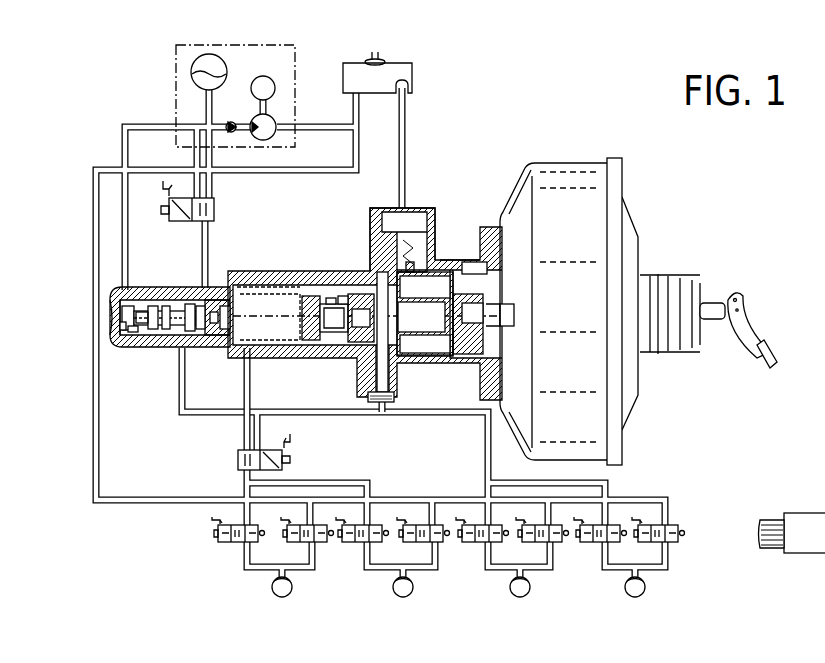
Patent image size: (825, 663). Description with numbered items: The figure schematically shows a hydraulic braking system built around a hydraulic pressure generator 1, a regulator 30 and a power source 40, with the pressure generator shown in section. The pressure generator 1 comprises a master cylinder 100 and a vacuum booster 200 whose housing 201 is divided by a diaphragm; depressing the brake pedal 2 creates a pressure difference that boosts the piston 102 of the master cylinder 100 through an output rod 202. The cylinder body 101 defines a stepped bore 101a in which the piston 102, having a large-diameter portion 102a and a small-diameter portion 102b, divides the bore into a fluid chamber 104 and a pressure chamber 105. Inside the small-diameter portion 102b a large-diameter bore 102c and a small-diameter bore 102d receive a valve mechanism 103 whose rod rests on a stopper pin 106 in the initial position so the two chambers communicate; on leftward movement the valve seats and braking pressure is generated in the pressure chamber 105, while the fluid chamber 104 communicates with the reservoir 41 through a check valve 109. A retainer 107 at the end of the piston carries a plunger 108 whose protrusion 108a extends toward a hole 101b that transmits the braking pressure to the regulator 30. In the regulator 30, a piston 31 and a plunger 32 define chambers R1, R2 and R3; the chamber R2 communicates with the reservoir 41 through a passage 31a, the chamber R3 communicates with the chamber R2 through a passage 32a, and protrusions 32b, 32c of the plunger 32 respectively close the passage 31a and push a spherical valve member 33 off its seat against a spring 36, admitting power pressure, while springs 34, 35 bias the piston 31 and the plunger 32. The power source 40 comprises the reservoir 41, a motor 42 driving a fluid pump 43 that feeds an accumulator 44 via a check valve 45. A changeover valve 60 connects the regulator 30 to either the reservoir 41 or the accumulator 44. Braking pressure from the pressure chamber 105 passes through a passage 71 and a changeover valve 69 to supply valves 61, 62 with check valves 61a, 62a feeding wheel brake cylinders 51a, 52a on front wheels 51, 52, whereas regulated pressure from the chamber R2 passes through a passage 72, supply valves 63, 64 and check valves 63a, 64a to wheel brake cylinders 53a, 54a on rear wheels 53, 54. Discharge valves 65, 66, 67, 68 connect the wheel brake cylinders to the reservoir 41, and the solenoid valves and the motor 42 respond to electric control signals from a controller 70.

The hydraulic pressure generator 1 is at (468, 220).
The brake pedal 2 is at (773, 368).
The regulator 30 is at (144, 329).
The piston 31 is at (216, 292).
The passage 31a is at (177, 300).
The plunger 32 is at (137, 345).
The passage 32a is at (150, 342).
The protrusion 32b is at (190, 345).
The protrusion 32c is at (112, 292).
The spherical valve member 33 is at (122, 315).
The spring 34 is at (166, 345).
The spring 35 is at (130, 340).
The spring 36 is at (123, 325).
The power source 40 is at (240, 104).
The reservoir 41 is at (412, 72).
The motor 42 is at (275, 88).
The fluid pump 43 is at (276, 122).
The accumulator 44 is at (191, 72).
The check valve 45 is at (233, 133).
The front road wheel 51 is at (272, 590).
The wheel brake cylinder 51a is at (291, 580).
The front road wheel 52 is at (393, 590).
The wheel brake cylinder 52a is at (412, 580).
The rear wheel 53 is at (510, 590).
The wheel brake cylinder 53a is at (529, 580).
The rear wheel 54 is at (625, 590).
The wheel brake cylinder 54a is at (644, 580).
The changeover valve 60 is at (215, 205).
The supply valve 61 is at (232, 542).
The check valve 61a is at (290, 542).
The supply valve 62 is at (352, 543).
The check valve 62a is at (395, 540).
The supply valve 63 is at (472, 543).
The check valve 63a is at (513, 540).
The supply valve 64 is at (588, 543).
The check valve 64a is at (630, 540).
The discharge valve 65 is at (327, 543).
The discharge valve 66 is at (446, 543).
The discharge valve 67 is at (563, 543).
The discharge valve 68 is at (682, 542).
The changeover valve 69 is at (280, 450).
The electric control device 70 is at (802, 553).
The hydraulic pressure passage 71 is at (243, 438).
The passage 72 is at (382, 418).
The master cylinder 100 is at (365, 289).
The cylinder body 101 is at (362, 272).
The stepped bore 101a is at (300, 285).
The hole 101b is at (238, 314).
The piston 102 is at (435, 339).
The large-diameter portion 102a is at (472, 264).
The small-diameter portion 102b is at (394, 288).
The large-diameter bore 102c is at (331, 298).
The small-diameter bore 102d is at (388, 316).
The valve mechanism 103 is at (377, 348).
The fluid chamber 104 is at (468, 358).
The pressure chamber 105 is at (306, 334).
The stopper pin 106 is at (394, 397).
The retainer 107 is at (330, 340).
The plunger 108 is at (352, 334).
The protrusion 108a is at (340, 300).
The check valve 109 is at (371, 234).
The vacuum booster 200 is at (605, 278).
The housing 201 is at (610, 452).
The output rod 202 is at (506, 300).
The chamber R1 is at (225, 345).
The chamber R2 is at (200, 344).
The chamber R3 is at (141, 300).